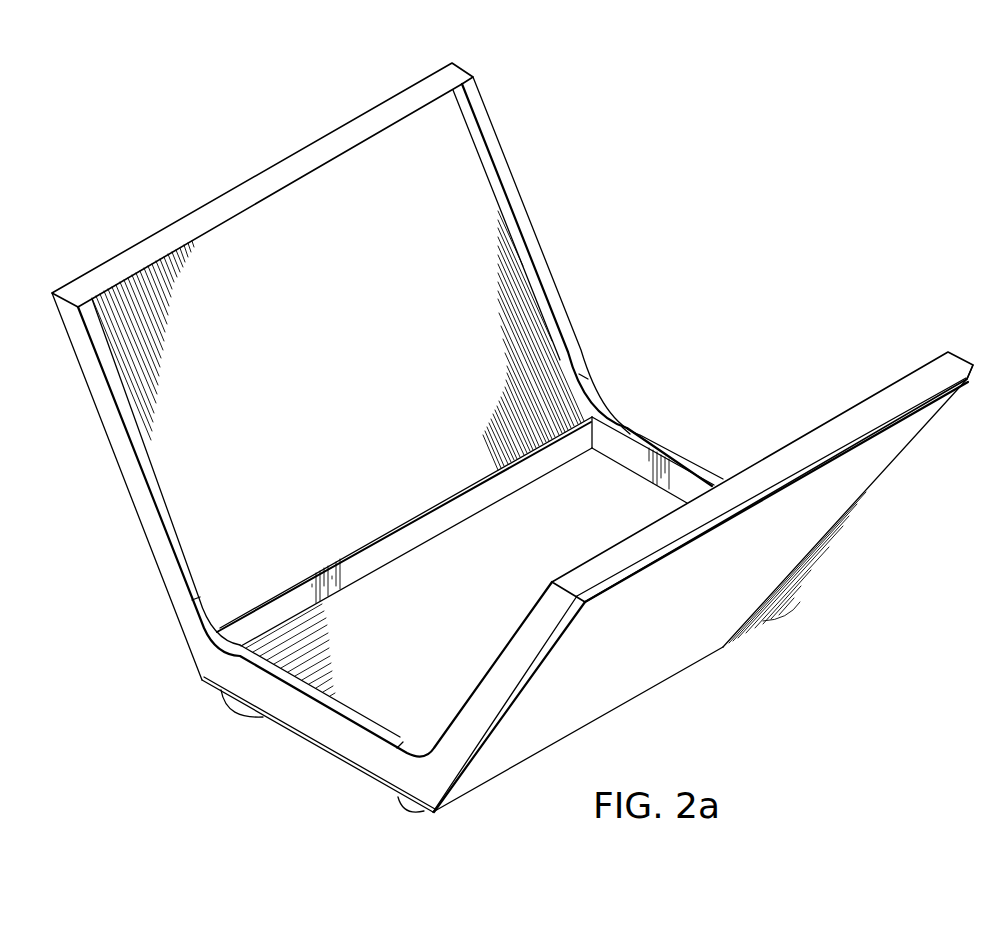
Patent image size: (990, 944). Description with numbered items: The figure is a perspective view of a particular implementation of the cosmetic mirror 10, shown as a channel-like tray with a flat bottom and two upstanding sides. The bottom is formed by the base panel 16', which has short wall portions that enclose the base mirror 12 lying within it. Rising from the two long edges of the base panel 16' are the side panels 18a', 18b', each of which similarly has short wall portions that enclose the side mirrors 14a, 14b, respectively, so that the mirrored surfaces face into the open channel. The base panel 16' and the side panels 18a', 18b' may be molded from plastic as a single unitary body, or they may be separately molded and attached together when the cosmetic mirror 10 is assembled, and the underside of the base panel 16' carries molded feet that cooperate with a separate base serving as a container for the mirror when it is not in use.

The cosmetic mirror 10 is at (726, 196).
The base mirror 12 is at (388, 593).
The side mirror 14a is at (480, 190).
The side mirror 14b is at (786, 445).
The base panel 16' is at (462, 729).
The side panel 18a' is at (262, 185).
The side panel 18b' is at (848, 506).